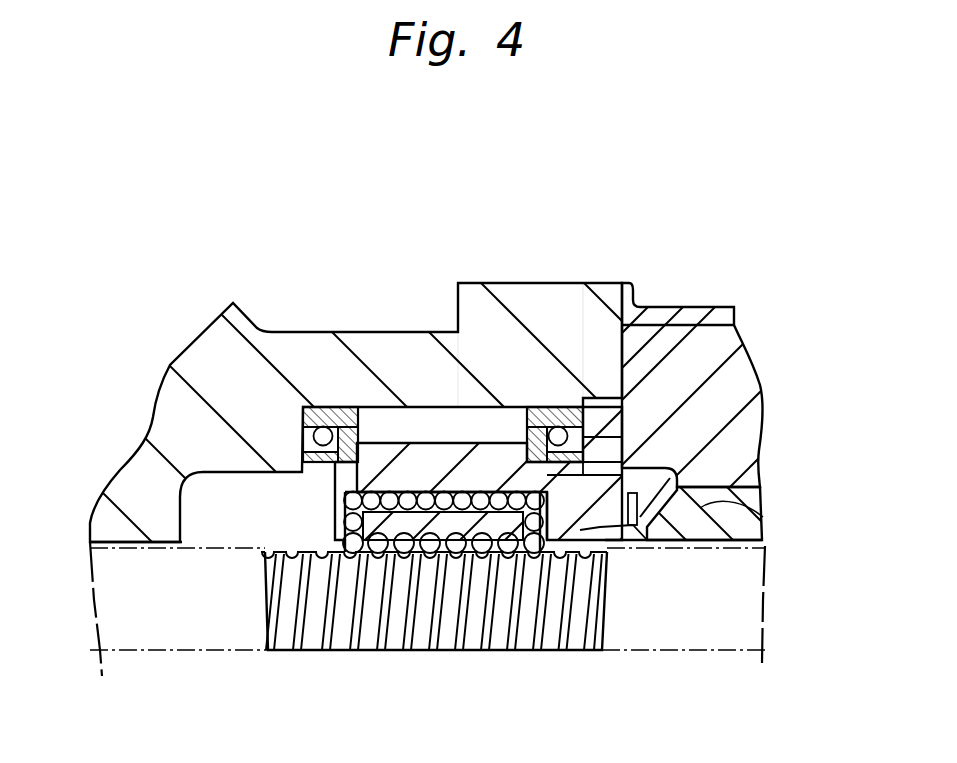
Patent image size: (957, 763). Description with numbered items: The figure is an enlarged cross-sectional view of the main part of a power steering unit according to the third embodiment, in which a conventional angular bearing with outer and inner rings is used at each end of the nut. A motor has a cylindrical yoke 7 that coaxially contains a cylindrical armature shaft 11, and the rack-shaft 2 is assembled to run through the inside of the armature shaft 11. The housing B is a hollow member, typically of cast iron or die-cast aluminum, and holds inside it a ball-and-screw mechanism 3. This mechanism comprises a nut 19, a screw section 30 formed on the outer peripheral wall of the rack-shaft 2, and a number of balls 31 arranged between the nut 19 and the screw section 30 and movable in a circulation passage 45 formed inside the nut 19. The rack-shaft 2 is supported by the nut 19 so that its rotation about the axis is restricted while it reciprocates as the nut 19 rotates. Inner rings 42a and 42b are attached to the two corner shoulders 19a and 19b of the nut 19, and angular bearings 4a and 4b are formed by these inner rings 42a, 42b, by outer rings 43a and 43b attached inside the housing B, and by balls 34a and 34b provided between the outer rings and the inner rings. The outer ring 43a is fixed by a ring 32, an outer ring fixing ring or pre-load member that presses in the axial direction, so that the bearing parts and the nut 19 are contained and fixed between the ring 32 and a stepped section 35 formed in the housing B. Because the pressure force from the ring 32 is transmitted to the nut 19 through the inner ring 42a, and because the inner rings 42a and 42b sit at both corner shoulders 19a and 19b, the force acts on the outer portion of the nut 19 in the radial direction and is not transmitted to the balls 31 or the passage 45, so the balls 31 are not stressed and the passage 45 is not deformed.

The housing B is at (205, 353).
The rack-shaft 2 is at (700, 597).
The ball-and-screw mechanism 3 is at (337, 561).
The angular bearing 4a is at (522, 420).
The angular bearing 4b is at (366, 428).
The yoke 7 is at (722, 308).
The armature shaft 11 is at (767, 510).
The nut 19 is at (447, 458).
The corner shoulder 19a is at (518, 462).
The corner shoulder 19b is at (357, 468).
The screw section 30 is at (560, 598).
The balls 31 is at (430, 540).
The ring 32 is at (622, 420).
The balls 34a is at (557, 407).
The balls 34b is at (350, 425).
The stepped section 35 is at (302, 446).
The inner ring 42a is at (597, 552).
The inner ring 42b is at (274, 549).
The outer ring 43a is at (570, 407).
The outer ring 43b is at (306, 405).
The circulation passage 45 is at (383, 494).